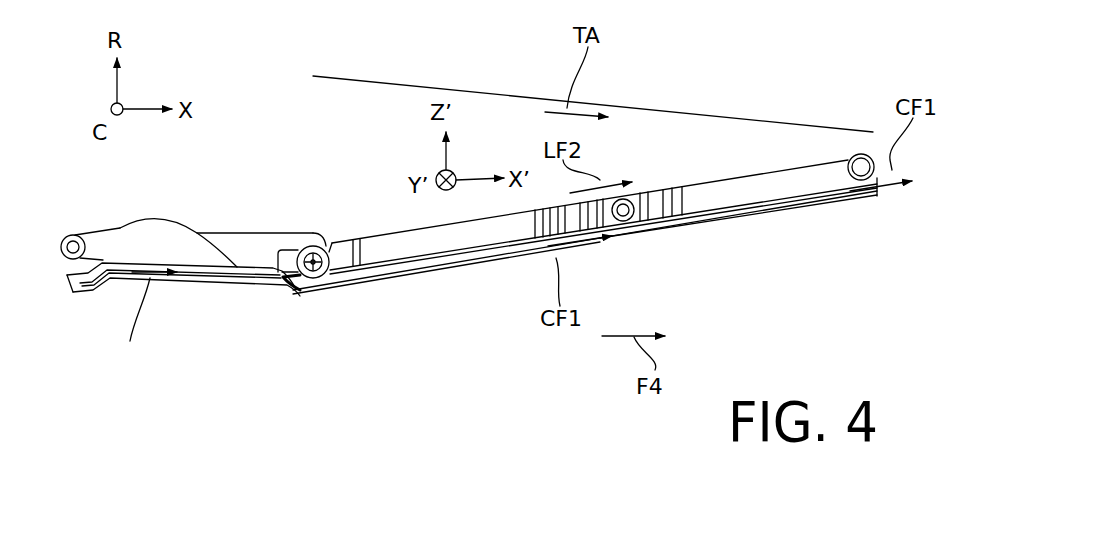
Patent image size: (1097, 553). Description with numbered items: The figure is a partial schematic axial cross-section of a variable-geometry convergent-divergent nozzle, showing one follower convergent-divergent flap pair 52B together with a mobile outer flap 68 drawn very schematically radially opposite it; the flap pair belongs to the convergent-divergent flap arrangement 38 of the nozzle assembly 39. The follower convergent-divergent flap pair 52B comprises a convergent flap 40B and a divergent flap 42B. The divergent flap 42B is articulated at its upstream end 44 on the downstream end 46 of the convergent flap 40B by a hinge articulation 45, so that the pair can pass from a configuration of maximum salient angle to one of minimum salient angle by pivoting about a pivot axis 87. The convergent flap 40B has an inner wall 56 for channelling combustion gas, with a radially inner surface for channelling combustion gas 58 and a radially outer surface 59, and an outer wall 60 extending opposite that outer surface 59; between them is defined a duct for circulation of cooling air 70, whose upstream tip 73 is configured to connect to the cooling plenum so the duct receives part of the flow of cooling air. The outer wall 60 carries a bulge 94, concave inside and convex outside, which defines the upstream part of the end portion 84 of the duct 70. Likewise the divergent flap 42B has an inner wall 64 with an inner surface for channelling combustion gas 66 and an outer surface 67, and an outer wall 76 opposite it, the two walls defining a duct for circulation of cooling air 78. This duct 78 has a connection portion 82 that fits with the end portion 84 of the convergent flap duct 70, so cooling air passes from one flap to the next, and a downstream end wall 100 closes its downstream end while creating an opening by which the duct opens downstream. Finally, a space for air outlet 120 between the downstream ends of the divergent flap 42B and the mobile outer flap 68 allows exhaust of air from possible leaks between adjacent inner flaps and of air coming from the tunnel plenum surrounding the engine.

The lower arm assembly 38 is at (472, 343).
The upper arm assembly 39 is at (859, 341).
The convergent flap 40B is at (217, 338).
The divergent flap 42B is at (465, 270).
The upstream end 44 is at (328, 246).
The hinge articulation 45 is at (313, 245).
The downstream end 46 is at (298, 227).
The follower convergent-divergent flap pair 52B is at (467, 407).
The inner wall 56 is at (110, 280).
The inner surface for channelling combustion gas 58 is at (205, 287).
The outer surface 59 is at (193, 278).
The outer wall 60 is at (170, 258).
The inner wall 64 is at (733, 226).
The inner surface for channelling combustion gas 66 is at (792, 207).
The outer surface 67 is at (777, 193).
The mobile outer flap 68 is at (527, 96).
The duct for circulation of cooling air 70 is at (122, 262).
The tip 73 is at (68, 236).
The outer wall 76 is at (713, 198).
The duct for circulation of cooling air 78 is at (704, 218).
The connection portion 82 is at (310, 280).
The end portion 84 is at (284, 292).
The pivot axis 87 is at (366, 241).
The bulge 94 is at (290, 262).
The downstream end wall 100 is at (887, 196).
The space for air outlet 120 is at (865, 145).